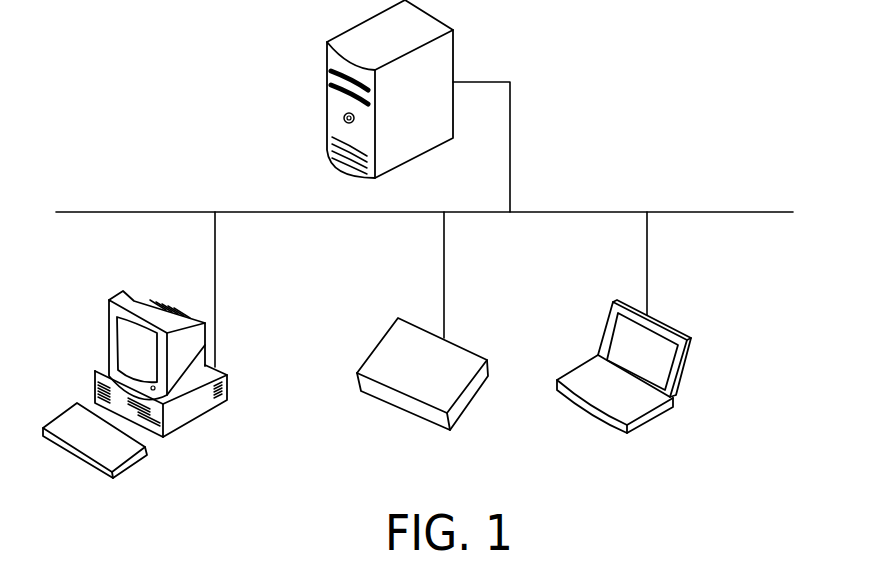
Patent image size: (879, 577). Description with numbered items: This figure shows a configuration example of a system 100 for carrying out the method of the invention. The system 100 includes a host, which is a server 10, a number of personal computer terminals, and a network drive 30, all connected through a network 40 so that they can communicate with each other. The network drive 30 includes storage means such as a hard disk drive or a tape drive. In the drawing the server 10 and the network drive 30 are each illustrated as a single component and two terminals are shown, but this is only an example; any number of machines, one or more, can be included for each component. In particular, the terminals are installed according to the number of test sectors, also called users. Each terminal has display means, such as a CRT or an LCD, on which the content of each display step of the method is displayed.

The host (server) 10 is at (453, 44).
The network drive 30 is at (438, 378).
The network 40 is at (608, 212).
The system 100 is at (688, 28).